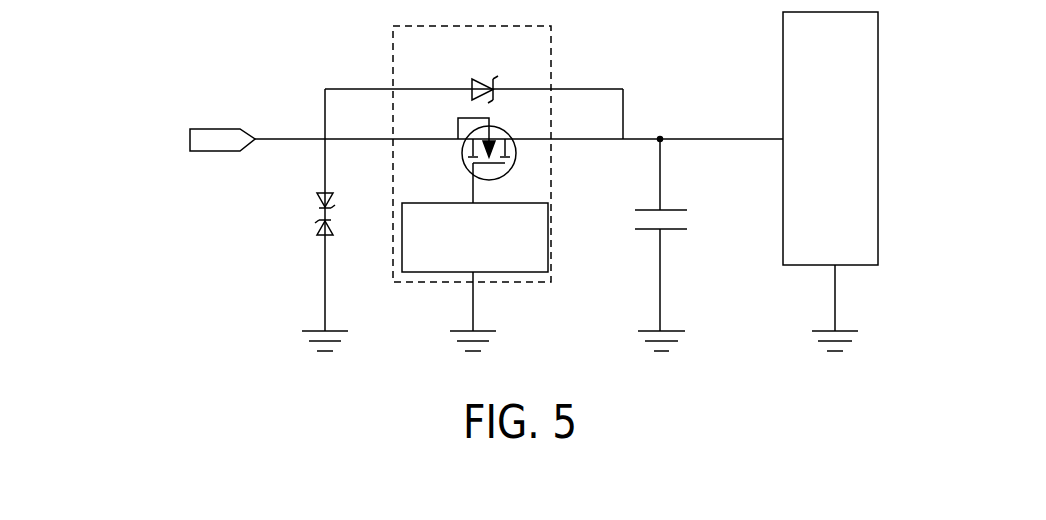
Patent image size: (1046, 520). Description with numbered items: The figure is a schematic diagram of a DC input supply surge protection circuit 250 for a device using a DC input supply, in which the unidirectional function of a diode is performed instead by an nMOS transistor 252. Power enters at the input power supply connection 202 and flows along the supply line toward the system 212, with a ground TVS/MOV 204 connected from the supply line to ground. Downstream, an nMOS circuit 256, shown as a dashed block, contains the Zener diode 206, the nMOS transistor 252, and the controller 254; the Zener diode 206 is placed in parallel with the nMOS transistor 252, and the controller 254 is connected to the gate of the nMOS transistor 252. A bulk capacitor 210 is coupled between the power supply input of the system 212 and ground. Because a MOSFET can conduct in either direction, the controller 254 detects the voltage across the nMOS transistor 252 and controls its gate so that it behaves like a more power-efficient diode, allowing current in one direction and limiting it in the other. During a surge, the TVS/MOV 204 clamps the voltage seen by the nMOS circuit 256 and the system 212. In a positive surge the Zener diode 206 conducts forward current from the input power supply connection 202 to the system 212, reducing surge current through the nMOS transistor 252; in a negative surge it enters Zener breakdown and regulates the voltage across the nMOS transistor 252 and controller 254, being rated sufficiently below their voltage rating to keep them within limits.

The DC input supply surge protection circuit 250 is at (138, 32).
The input power supply connection 202 is at (210, 129).
The ground TVS/MOV 204 is at (333, 215).
The Zener diode 206 is at (487, 78).
The nMOS circuit 256 is at (472, 26).
The nMOS transistor 252 is at (516, 157).
The controller 254 is at (548, 240).
The bulk capacitor 210 is at (670, 210).
The system 212 is at (878, 133).